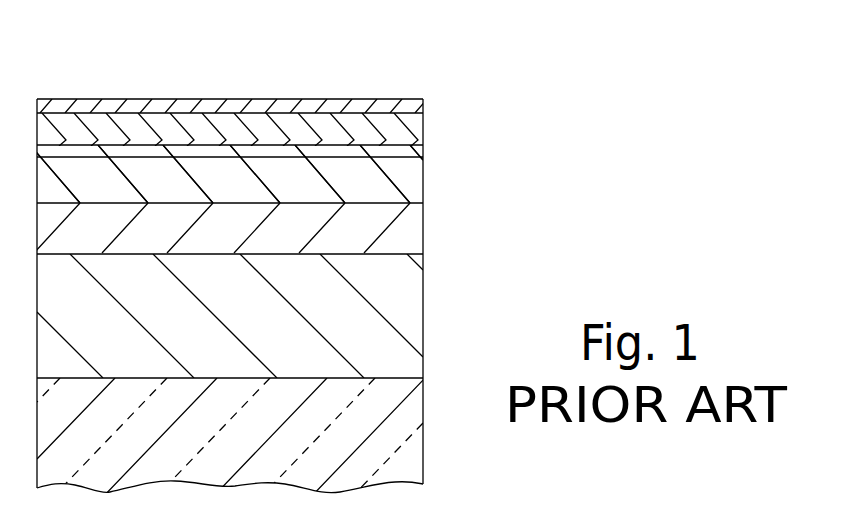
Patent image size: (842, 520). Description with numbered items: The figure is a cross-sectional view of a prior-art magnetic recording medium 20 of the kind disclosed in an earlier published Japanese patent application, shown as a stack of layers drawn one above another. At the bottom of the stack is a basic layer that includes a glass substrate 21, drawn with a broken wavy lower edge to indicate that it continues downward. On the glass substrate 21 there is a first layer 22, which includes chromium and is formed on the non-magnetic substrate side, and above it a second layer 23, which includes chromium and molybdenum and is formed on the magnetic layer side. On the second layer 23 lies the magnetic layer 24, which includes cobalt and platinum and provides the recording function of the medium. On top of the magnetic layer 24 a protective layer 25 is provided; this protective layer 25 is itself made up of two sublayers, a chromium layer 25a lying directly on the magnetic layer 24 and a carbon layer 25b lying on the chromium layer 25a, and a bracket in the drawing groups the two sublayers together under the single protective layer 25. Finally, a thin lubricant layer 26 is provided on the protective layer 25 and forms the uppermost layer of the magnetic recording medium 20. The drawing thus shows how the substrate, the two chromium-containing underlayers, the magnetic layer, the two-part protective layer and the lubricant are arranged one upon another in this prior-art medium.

The magnetic recording medium 20 is at (383, 53).
The glass substrate 21 is at (423, 420).
The first layer 22 is at (423, 315).
The second layer 23 is at (423, 231).
The magnetic layer 24 is at (423, 190).
The protective layer 25 is at (285, 158).
The chromium layer 25a is at (423, 150).
The carbon layer 25b is at (429, 125).
The lubricant layer 26 is at (423, 100).